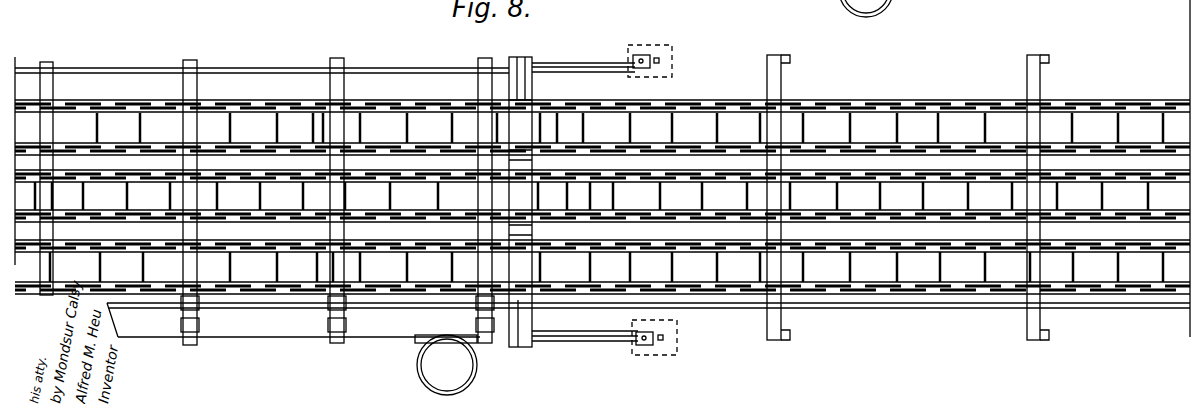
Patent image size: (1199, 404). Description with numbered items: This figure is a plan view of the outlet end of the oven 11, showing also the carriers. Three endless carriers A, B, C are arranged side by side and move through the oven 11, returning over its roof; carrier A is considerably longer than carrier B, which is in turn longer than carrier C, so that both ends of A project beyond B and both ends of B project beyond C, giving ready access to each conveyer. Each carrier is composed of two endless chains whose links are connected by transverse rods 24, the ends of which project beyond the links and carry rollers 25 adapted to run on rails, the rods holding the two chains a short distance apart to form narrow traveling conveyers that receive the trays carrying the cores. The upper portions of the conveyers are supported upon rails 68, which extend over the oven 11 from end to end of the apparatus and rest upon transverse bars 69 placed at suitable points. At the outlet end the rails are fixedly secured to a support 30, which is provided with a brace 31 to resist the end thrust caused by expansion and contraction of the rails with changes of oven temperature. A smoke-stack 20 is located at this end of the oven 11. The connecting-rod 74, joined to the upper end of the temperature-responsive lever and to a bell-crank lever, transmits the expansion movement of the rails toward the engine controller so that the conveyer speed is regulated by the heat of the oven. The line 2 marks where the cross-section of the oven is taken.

The section line 2 is at (332, 0).
The oven 11 is at (262, 161).
The smoke-stack 20 is at (446, 365).
The transverse rods 24 is at (437, 190).
The rollers 25 is at (670, 151).
The support 30 is at (522, 55).
The brace 31 is at (583, 65).
The rails 68 is at (833, 97).
The transverse bars 69 is at (190, 90).
The connecting-rod 74 is at (727, 305).
The endless carrier A is at (143, 248).
The endless carrier B is at (132, 180).
The endless carrier C is at (97, 110).